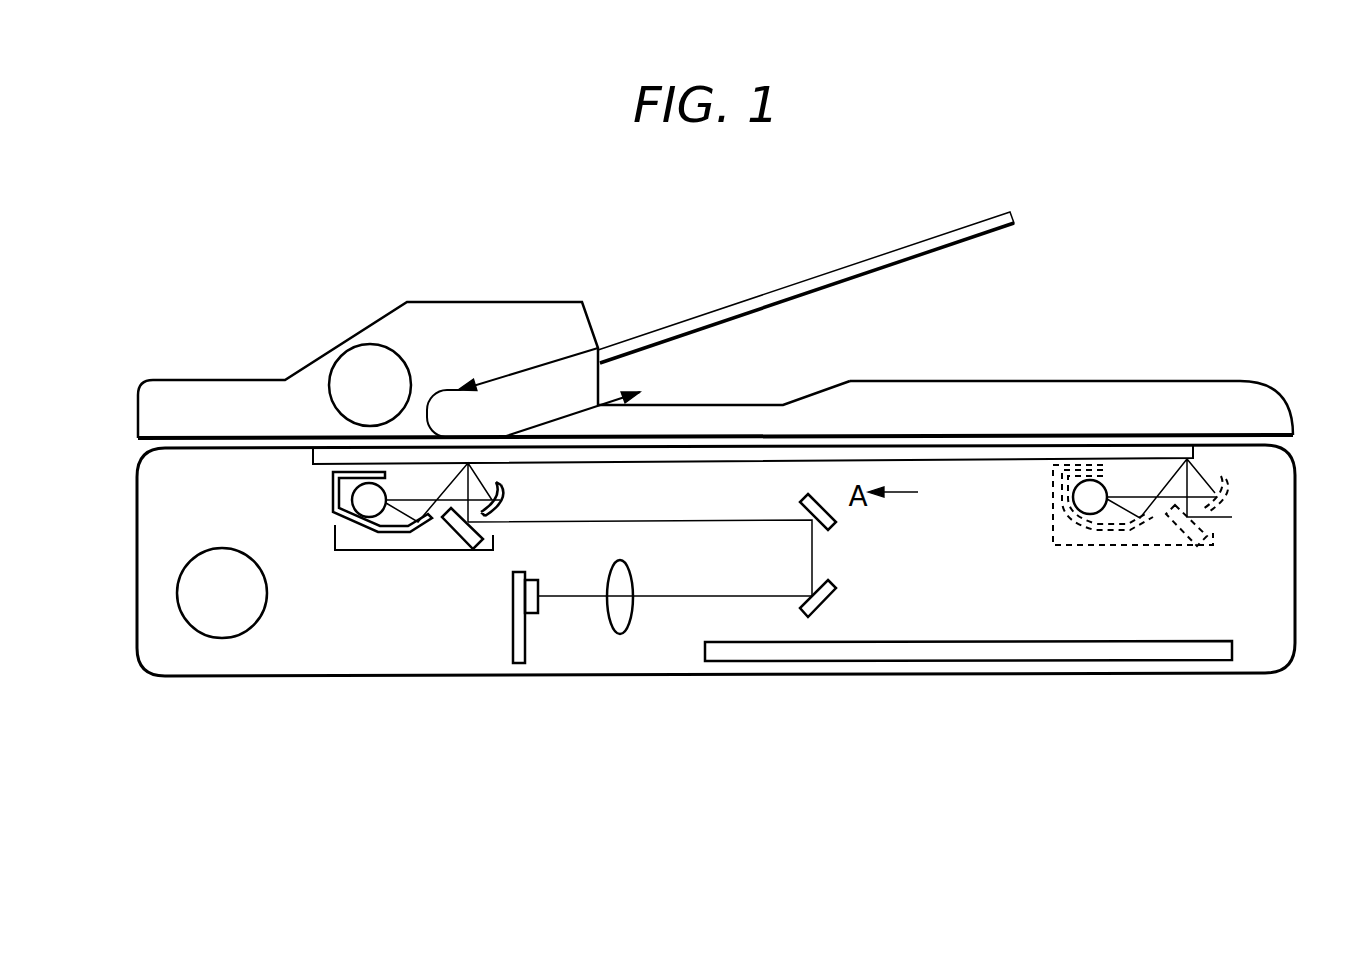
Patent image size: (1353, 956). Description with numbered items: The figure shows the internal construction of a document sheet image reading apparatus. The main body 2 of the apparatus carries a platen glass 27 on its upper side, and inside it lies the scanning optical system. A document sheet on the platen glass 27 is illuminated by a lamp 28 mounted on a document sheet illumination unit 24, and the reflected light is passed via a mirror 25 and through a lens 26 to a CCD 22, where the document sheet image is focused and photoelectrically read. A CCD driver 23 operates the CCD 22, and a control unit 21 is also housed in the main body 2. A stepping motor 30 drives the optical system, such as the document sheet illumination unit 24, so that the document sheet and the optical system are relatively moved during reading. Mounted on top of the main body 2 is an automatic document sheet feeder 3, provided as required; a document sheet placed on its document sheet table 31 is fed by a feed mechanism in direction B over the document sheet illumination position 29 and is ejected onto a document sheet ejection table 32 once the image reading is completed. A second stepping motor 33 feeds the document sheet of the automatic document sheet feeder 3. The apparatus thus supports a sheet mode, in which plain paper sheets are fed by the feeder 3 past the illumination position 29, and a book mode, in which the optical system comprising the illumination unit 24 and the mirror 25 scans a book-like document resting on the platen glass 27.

The main body 2 is at (1270, 478).
The automatic document sheet feeder 3 is at (1185, 395).
The control unit 21 is at (747, 662).
The CCD 22 is at (540, 580).
The CCD driver 23 is at (513, 620).
The document sheet illumination unit 24 is at (368, 550).
The mirror 25 is at (840, 585).
The lens 26 is at (632, 575).
The platen glass 27 is at (970, 458).
The lamp 28 is at (353, 495).
The document sheet illumination position 29 is at (488, 437).
The stepping motor 30 is at (228, 548).
The document sheet table 31 is at (928, 242).
The document sheet ejection table 32 is at (772, 403).
The stepping motor 33 is at (405, 367).